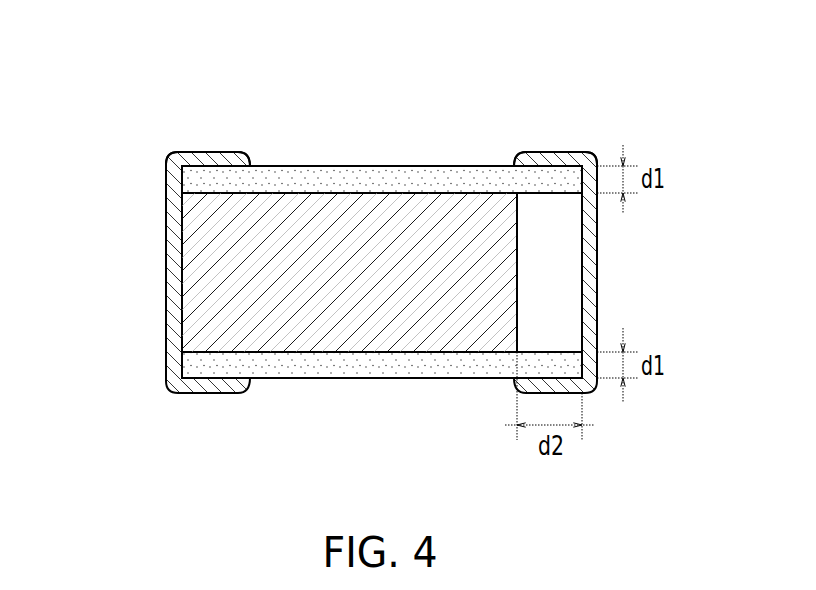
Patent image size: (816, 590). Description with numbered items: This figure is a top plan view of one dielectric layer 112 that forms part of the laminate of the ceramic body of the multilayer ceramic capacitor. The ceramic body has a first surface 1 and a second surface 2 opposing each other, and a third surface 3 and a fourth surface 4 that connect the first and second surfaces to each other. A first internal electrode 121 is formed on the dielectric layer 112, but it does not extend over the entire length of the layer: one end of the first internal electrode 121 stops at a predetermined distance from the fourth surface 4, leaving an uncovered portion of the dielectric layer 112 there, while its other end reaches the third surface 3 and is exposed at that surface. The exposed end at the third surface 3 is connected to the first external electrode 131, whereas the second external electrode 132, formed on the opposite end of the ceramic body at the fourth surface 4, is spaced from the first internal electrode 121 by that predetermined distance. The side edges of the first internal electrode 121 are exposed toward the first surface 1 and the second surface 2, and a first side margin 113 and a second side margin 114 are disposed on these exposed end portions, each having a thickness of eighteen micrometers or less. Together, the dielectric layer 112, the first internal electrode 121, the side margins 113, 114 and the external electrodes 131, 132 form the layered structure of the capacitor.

The first surface 1 is at (408, 269).
The second surface 2 is at (382, 322).
The third surface 3 is at (244, 231).
The fourth surface 4 is at (544, 222).
The dielectric layer 112 is at (568, 310).
The first side margin 113 is at (192, 177).
The second side margin 114 is at (193, 368).
The first internal electrode 121 is at (357, 312).
The first external electrode 131 is at (212, 152).
The second external electrode 132 is at (557, 157).